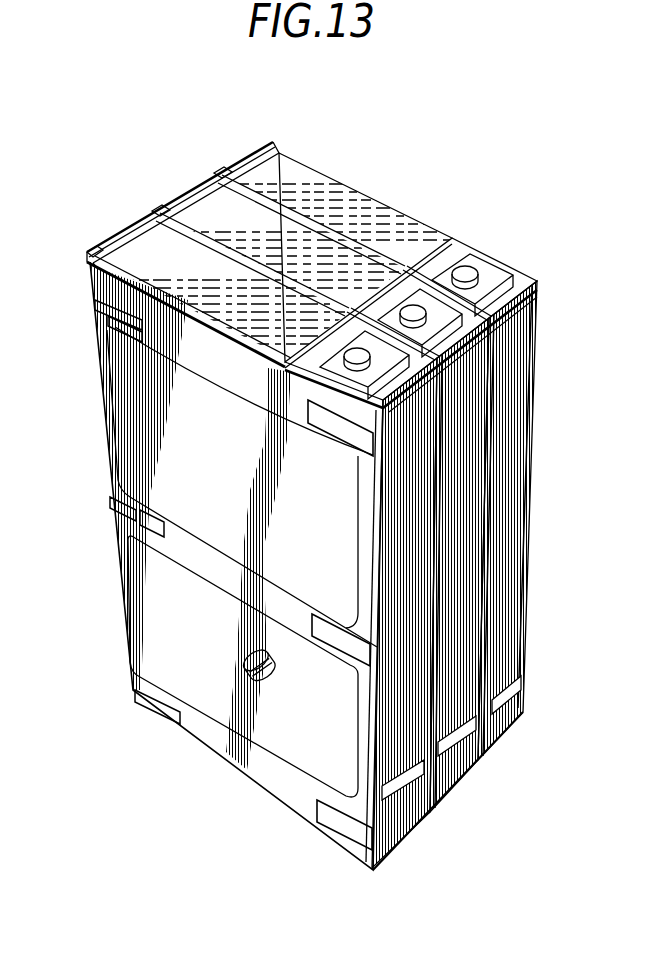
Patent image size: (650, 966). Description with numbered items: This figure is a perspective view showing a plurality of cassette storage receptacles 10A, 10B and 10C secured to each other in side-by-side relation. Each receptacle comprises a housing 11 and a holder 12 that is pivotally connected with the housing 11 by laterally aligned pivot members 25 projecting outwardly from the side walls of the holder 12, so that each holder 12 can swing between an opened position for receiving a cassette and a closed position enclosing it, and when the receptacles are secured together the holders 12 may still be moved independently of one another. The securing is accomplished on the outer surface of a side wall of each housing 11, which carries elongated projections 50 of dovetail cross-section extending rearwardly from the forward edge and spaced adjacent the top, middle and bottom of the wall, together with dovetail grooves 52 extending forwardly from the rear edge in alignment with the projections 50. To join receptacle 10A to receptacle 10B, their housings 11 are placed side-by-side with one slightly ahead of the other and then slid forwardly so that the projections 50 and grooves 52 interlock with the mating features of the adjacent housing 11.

The storage receptacle 10A is at (113, 248).
The storage receptacle 10B is at (176, 208).
The storage receptacle 10C is at (238, 150).
The housing 11 is at (96, 396).
The holder 12 is at (517, 405).
The first laterally aligned pivot members 25 is at (258, 678).
The elongated projections 50 is at (347, 428).
The grooves 52 is at (115, 312).